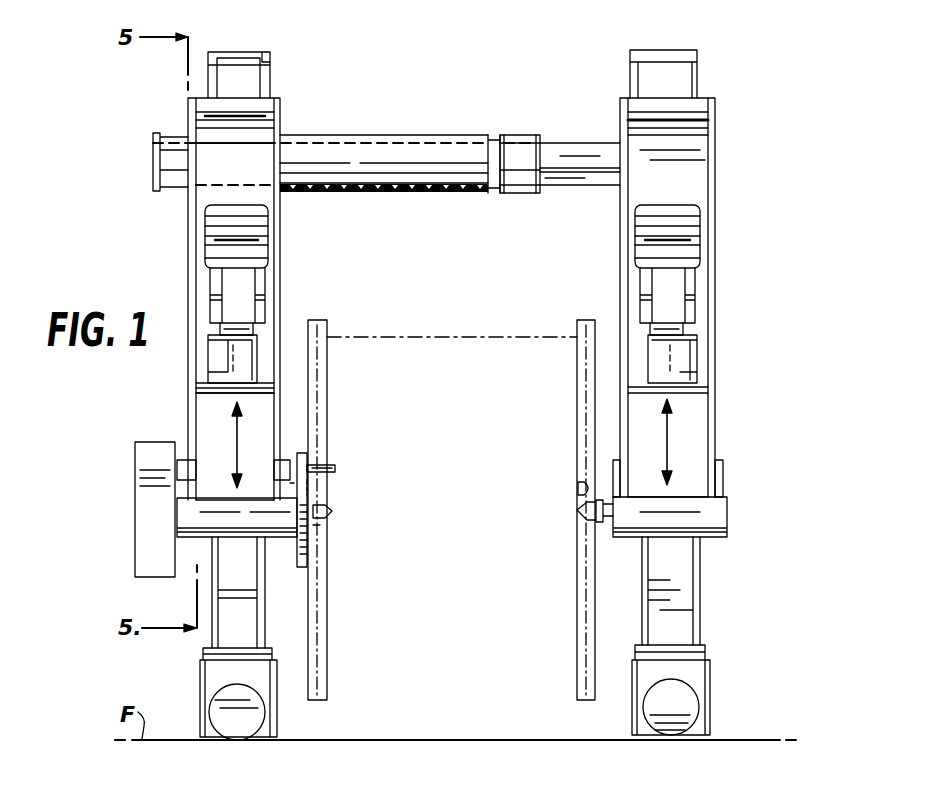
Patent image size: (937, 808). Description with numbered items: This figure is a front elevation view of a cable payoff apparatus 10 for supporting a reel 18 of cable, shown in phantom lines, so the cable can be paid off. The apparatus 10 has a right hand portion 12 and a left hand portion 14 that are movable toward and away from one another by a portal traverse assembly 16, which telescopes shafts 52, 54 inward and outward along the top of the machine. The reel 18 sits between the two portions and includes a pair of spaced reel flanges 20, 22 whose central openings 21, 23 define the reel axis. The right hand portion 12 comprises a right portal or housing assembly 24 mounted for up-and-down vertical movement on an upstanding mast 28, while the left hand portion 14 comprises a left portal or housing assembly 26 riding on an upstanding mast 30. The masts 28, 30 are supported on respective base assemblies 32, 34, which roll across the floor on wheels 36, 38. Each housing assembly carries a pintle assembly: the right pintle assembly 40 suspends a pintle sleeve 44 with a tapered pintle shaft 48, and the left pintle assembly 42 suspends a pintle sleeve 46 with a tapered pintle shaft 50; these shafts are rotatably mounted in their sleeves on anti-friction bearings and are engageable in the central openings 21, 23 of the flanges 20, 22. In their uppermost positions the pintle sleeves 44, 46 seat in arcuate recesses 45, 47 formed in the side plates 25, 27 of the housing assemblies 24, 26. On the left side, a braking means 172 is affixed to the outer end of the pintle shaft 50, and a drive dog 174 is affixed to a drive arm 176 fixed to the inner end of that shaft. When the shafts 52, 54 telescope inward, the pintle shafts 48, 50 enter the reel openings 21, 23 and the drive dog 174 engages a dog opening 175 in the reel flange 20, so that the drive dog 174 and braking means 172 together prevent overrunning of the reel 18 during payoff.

The cable payoff apparatus 10 is at (437, 62).
The right hand portion 12 is at (746, 99).
The left hand portion 14 is at (152, 211).
The portal traverse assembly 16 is at (439, 122).
The reel 18 is at (483, 358).
The reel flange 20 is at (326, 322).
The central opening 21 is at (572, 487).
The reel flange 22 is at (582, 318).
The central opening 23 is at (325, 486).
The right portal or housing assembly 24 is at (690, 162).
The side plate 25 is at (621, 220).
The left portal or housing assembly 26 is at (200, 405).
The side plate 27 is at (190, 242).
The upstanding mast 28 is at (680, 568).
The upstanding mast 30 is at (245, 607).
The base assembly 32 is at (710, 680).
The base assembly 34 is at (275, 718).
The wheel 36 is at (680, 707).
The wheel 38 is at (237, 735).
The right pintle assembly 40 is at (723, 434).
The left pintle assembly 42 is at (112, 466).
The pintle sleeve 44 is at (728, 522).
The arcuate recess 45 is at (625, 470).
The pintle sleeve 46 is at (248, 526).
The arcuate recess 47 is at (175, 470).
The tapered pintle shaft 48 is at (577, 512).
The tapered pintle shaft 50 is at (332, 514).
The shaft 52 is at (575, 150).
The shaft 54 is at (422, 195).
The braking means 172 is at (150, 545).
The drive dog 174 is at (338, 465).
The dog opening 175 is at (333, 445).
The drive arm 176 is at (310, 560).